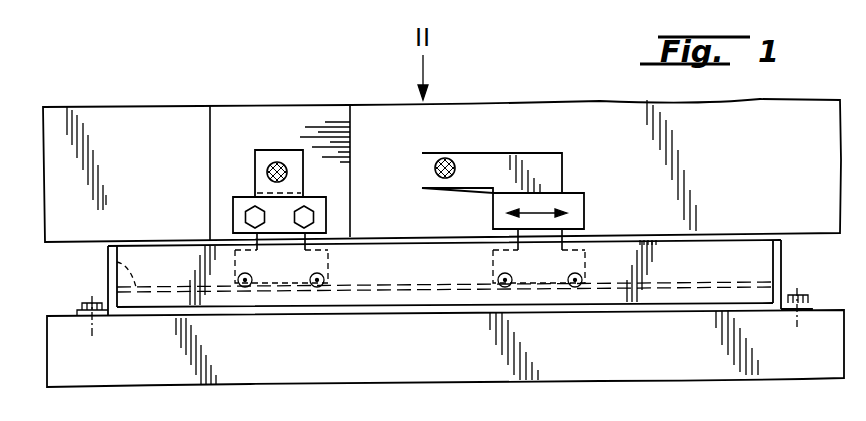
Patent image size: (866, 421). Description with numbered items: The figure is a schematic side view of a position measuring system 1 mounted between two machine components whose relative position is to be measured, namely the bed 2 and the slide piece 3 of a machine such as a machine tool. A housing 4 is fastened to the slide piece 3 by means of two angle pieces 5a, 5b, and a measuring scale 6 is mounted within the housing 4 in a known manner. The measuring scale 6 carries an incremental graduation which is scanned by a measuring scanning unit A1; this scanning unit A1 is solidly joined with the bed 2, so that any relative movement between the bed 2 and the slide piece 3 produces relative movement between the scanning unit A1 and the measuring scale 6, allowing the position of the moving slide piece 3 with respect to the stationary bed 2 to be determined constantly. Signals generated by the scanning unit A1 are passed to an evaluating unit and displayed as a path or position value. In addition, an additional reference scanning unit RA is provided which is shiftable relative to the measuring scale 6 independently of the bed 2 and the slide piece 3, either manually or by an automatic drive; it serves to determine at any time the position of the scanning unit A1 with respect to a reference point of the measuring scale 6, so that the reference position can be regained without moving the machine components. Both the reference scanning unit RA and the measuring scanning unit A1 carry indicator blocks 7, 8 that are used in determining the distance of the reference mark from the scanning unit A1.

The position measuring system 1 is at (428, 273).
The bed 2 is at (758, 170).
The slide piece 3 is at (655, 355).
The housing 4 is at (757, 257).
The angle piece 5a is at (108, 278).
The angle piece 5b is at (777, 272).
The measuring scale 6 is at (108, 258).
The indicator block 7 is at (448, 160).
The indicator block 8 is at (277, 163).
The measuring scanning unit A1 is at (240, 208).
The reference scanning unit RA is at (572, 197).